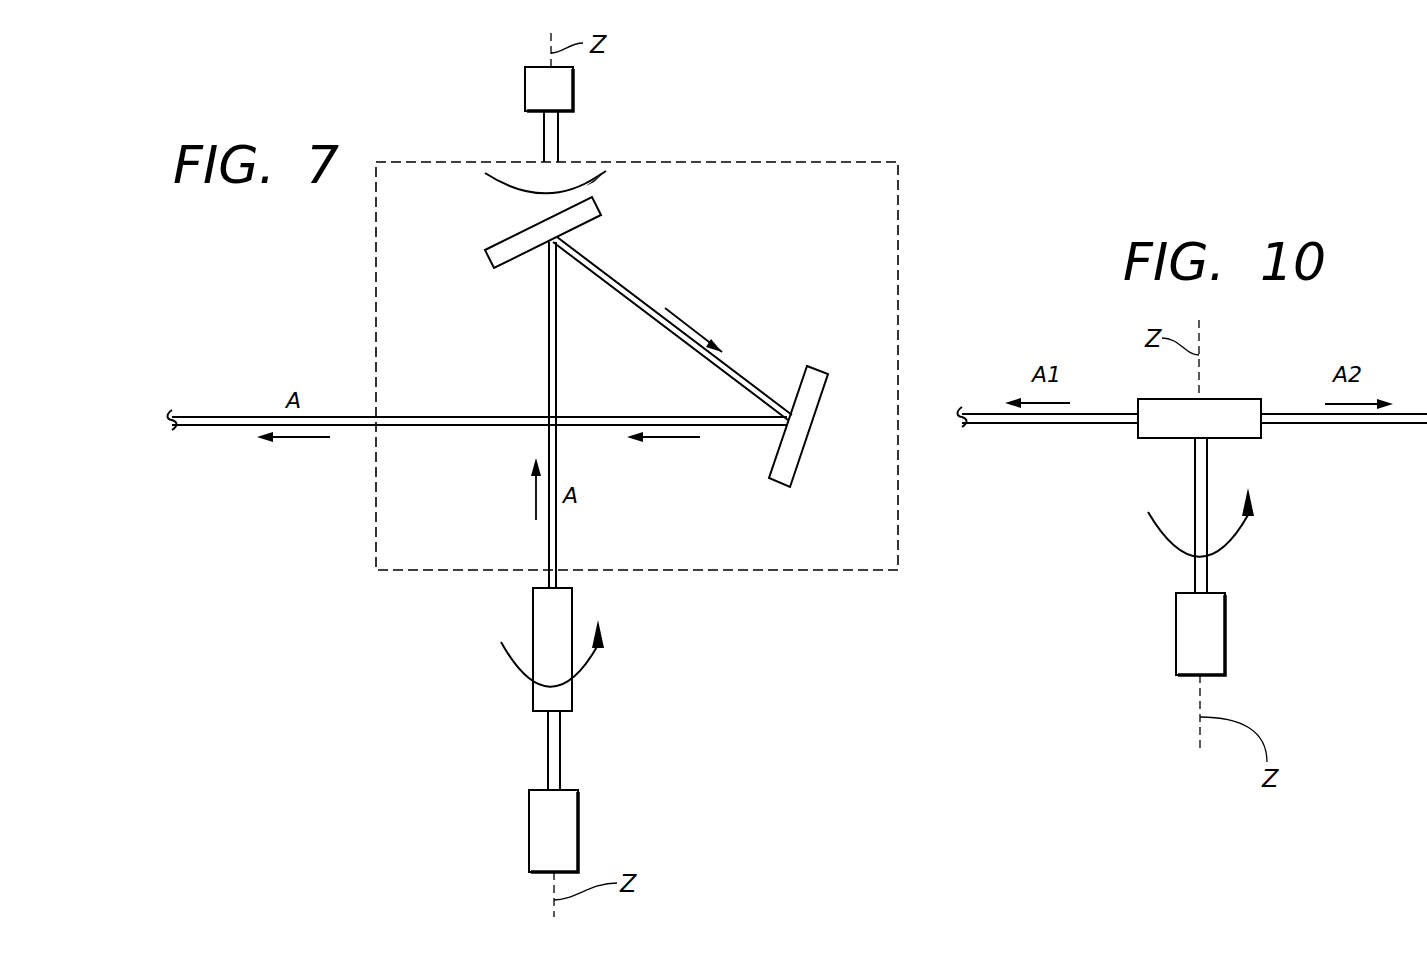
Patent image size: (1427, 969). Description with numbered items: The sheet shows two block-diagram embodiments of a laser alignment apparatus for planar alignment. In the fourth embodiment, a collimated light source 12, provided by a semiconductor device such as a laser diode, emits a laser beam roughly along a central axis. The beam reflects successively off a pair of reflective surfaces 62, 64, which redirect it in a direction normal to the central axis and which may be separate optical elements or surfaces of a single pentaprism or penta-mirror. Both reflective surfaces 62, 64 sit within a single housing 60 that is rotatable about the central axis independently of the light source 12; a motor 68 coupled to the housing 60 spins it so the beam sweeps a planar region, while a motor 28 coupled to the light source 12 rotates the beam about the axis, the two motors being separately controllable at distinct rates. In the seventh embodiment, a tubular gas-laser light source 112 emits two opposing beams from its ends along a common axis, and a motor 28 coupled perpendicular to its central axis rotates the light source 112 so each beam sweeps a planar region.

In FIG. 7, the collimated light source 12 is at (533, 623).
In FIG. 7, the motor 28 is at (573, 100).
In FIG. 10, the motor 28 is at (1225, 630).
In FIG. 7, the housing 60 is at (898, 228).
In FIG. 7, the reflective surface 62 is at (527, 230).
In FIG. 7, the reflective surface 64 is at (802, 456).
In FIG. 7, the motor 68 is at (578, 825).
In FIG. 10, the collimated light source 112 is at (1237, 399).